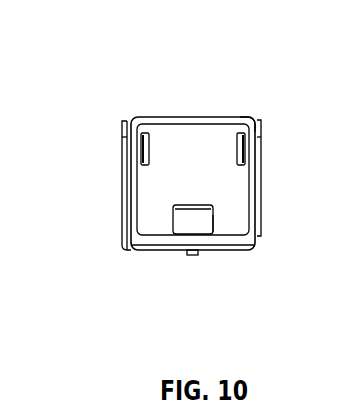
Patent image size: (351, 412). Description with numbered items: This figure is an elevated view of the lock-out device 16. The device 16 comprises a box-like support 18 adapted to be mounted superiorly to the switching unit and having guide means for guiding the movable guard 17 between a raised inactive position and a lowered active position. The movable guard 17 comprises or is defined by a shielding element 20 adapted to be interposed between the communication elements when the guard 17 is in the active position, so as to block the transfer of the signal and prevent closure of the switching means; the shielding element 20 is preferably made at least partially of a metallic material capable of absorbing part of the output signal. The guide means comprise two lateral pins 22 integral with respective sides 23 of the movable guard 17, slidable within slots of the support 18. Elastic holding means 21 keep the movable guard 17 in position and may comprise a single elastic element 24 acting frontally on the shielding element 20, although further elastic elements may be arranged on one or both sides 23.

The lock-out device 16 is at (97, 103).
The movable guard 17 is at (250, 120).
The box-like support 18 is at (191, 117).
The shielding element 20 is at (152, 252).
The elastic holding means 21 is at (215, 217).
The lateral pins 22 is at (145, 155).
The sides 23 is at (122, 205).
The elastic element 24 is at (195, 223).